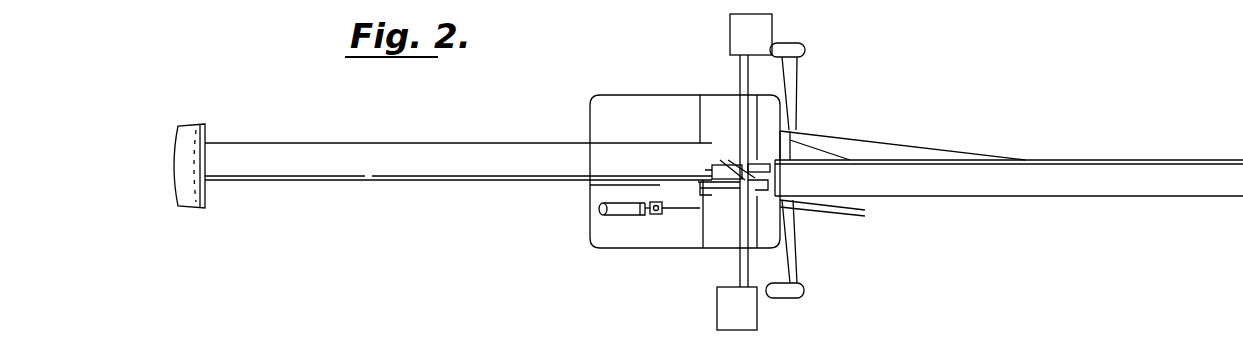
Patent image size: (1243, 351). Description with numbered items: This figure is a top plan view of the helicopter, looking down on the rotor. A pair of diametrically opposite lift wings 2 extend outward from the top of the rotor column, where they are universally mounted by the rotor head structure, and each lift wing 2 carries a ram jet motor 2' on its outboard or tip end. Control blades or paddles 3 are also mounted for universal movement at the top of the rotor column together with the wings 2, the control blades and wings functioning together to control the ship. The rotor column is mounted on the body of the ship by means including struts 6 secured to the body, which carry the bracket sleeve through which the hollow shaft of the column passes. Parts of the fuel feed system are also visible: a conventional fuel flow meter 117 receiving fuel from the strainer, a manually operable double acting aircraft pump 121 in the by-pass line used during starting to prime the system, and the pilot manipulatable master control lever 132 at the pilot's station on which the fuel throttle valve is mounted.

The lift wing 2 is at (724, 175).
The ram jet motor 2' is at (212, 170).
The control blade 3 is at (765, 27).
The strut 6 is at (812, 147).
The fuel flow meter 117 is at (604, 213).
The double acting aircraft pump 121 is at (658, 216).
The master control lever 132 is at (712, 188).